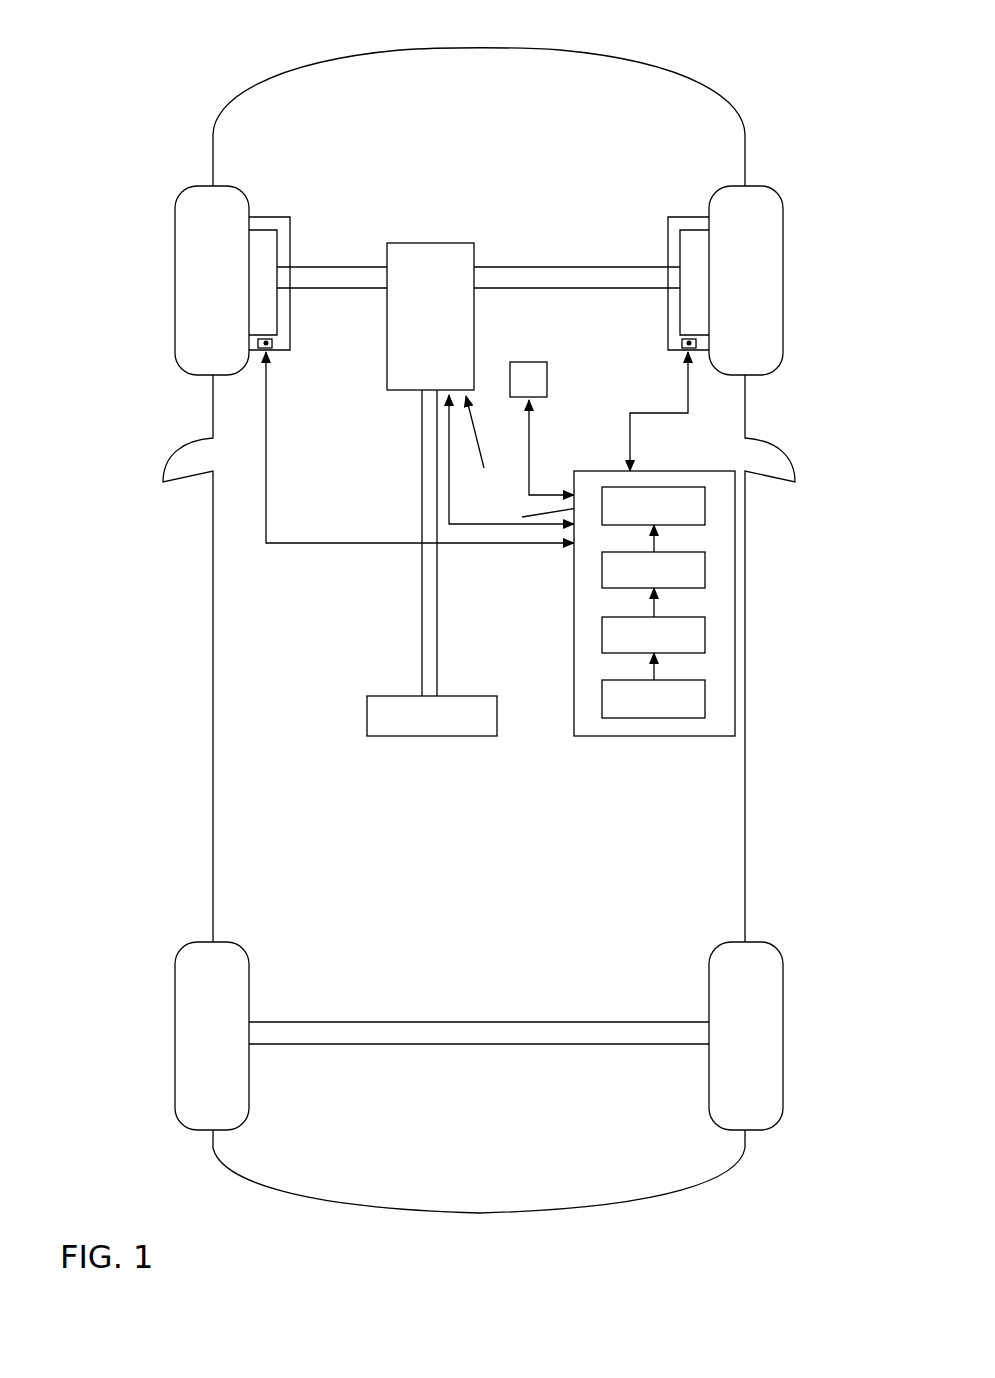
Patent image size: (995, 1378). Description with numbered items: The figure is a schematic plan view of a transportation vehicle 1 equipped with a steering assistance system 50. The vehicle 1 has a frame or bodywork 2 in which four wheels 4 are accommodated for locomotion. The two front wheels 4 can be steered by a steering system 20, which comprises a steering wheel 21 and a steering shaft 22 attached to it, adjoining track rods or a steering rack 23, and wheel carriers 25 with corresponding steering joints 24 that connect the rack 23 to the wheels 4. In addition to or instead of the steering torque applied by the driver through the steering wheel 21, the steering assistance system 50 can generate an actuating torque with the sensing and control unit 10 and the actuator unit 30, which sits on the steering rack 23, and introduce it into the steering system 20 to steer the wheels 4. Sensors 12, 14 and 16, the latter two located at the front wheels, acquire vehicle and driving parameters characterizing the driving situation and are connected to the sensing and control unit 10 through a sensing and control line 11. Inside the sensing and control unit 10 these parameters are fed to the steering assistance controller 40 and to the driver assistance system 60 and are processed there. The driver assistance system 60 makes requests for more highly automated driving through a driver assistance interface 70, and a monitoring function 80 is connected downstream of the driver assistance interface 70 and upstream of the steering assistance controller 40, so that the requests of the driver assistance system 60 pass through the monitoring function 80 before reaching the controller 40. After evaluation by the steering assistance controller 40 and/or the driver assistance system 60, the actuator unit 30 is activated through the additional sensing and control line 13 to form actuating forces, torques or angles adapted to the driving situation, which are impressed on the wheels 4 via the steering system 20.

The transportation vehicle 1 is at (230, 80).
The frame or bodywork 2 is at (660, 70).
The wheels 4 is at (175, 286).
The sensing and control unit 10 is at (693, 638).
The sensing and control line 11 is at (266, 505).
The sensor 12 is at (527, 362).
The additional sensing and control line 13 is at (449, 468).
The sensor 14 is at (686, 345).
The sensor 16 is at (270, 344).
The steering system 20 is at (368, 563).
The steering wheel 21 is at (367, 717).
The steering shaft 22 is at (422, 612).
The track rods, steering rail or steering rack 23 is at (333, 266).
The steering joints 24 is at (277, 312).
The wheel carriers 25 is at (268, 217).
The actuator unit 30 is at (430, 244).
The steering assistance controller 40 is at (705, 506).
The steering assistance system 50 is at (522, 517).
The driver assistance system 60 is at (705, 700).
The driver assistance interface 70 is at (705, 633).
The monitoring function 80 is at (705, 570).